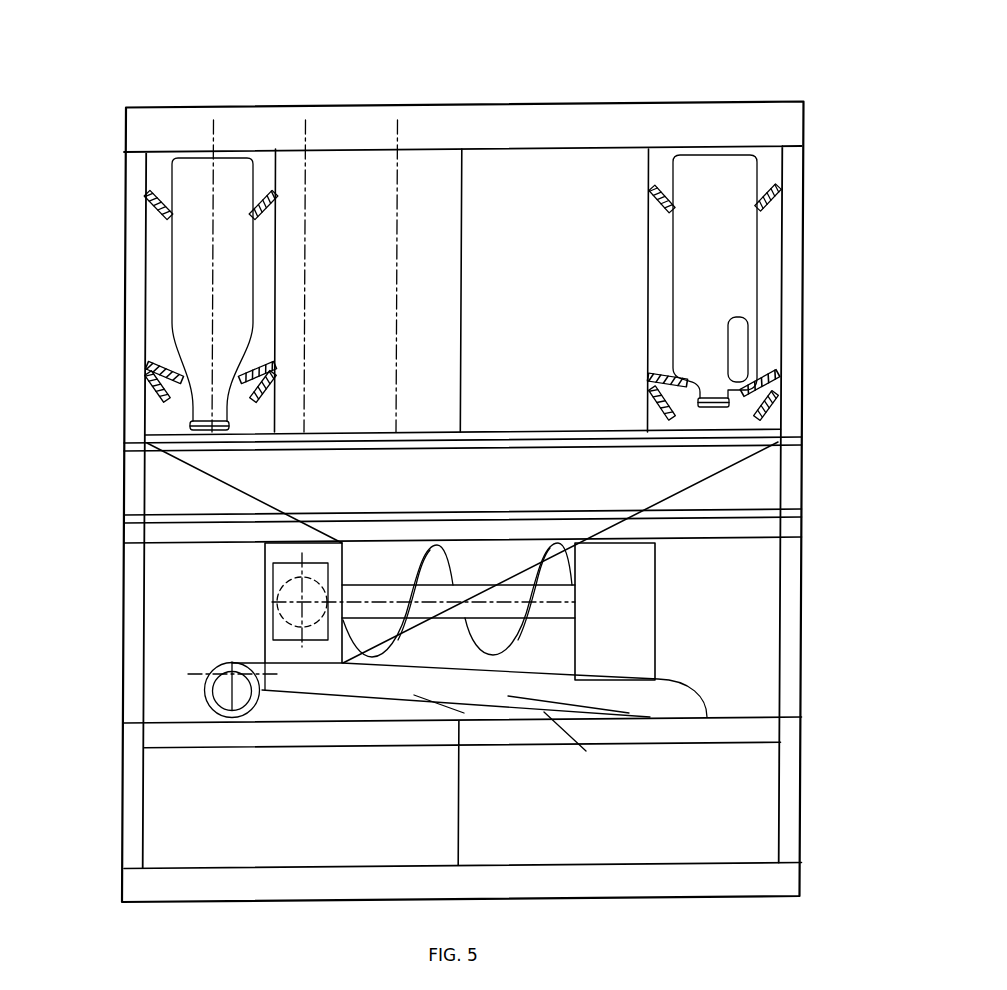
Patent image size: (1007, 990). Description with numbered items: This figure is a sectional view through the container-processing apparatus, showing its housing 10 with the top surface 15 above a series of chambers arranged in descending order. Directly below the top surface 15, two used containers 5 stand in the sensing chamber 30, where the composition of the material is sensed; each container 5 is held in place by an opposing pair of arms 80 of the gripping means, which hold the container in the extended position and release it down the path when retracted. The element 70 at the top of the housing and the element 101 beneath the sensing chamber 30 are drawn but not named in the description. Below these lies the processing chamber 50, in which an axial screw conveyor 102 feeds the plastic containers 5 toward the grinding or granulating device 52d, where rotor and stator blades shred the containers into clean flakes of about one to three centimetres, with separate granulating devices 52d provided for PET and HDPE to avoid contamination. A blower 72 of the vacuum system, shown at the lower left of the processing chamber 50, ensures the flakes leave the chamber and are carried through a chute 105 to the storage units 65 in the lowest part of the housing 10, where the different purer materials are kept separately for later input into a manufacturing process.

The housing 10 is at (252, 902).
The top surface 15 is at (620, 148).
The top panel 70 is at (553, 135).
The sensing chamber 30 is at (597, 220).
The container 5 is at (233, 188).
The arms 80 is at (778, 373).
The shelf 101 is at (703, 478).
The processing chamber 50 is at (108, 542).
The axial screw conveyor 102 is at (528, 635).
The grinding or granulating device 52d is at (640, 585).
The blower 72 is at (203, 693).
The chutes 105 is at (700, 695).
The storage units 65 is at (747, 823).